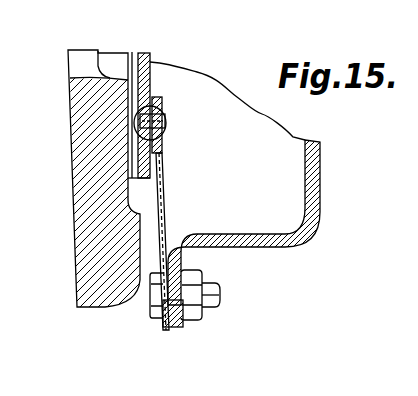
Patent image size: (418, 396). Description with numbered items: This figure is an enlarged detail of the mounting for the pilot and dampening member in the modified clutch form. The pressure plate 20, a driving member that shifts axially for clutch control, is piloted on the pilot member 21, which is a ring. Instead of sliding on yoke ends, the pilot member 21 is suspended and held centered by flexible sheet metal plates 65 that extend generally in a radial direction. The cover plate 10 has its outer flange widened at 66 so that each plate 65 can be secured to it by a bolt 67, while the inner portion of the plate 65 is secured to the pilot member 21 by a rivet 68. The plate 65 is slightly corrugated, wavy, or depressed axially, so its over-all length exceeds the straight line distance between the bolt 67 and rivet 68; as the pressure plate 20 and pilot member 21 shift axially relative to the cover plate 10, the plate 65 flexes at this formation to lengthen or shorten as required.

The cover plate 10 is at (318, 172).
The pressure plate 20 is at (87, 247).
The pilot member 21 is at (150, 58).
The flexible sheet metal plate 65 is at (166, 200).
The widened outer flange 66 is at (183, 323).
The bolt 67 is at (208, 290).
The rivet 68 is at (155, 120).